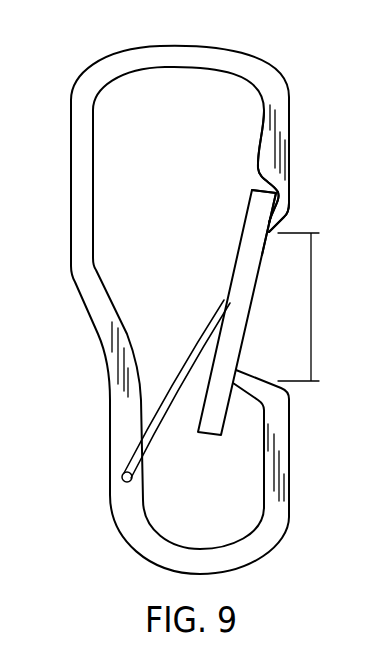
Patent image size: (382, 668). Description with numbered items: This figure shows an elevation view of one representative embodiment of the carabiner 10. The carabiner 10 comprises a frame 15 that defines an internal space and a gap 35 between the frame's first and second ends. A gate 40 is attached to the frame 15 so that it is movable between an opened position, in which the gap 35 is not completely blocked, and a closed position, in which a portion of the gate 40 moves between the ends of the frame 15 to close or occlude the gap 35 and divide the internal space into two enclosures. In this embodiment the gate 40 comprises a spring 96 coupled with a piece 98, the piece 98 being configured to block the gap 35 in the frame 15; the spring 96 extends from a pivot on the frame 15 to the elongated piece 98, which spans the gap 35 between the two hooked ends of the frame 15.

The carabiner 10 is at (91, 71).
The frame 15 is at (291, 82).
The gap 35 is at (312, 276).
The gate 40 is at (238, 308).
The spring 96 is at (204, 334).
The piece 98 is at (253, 222).